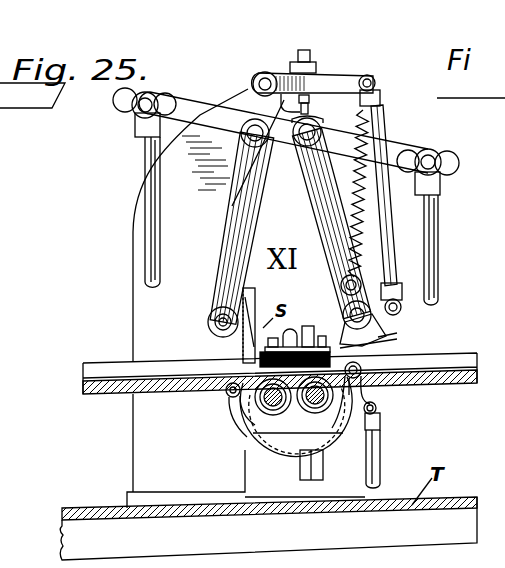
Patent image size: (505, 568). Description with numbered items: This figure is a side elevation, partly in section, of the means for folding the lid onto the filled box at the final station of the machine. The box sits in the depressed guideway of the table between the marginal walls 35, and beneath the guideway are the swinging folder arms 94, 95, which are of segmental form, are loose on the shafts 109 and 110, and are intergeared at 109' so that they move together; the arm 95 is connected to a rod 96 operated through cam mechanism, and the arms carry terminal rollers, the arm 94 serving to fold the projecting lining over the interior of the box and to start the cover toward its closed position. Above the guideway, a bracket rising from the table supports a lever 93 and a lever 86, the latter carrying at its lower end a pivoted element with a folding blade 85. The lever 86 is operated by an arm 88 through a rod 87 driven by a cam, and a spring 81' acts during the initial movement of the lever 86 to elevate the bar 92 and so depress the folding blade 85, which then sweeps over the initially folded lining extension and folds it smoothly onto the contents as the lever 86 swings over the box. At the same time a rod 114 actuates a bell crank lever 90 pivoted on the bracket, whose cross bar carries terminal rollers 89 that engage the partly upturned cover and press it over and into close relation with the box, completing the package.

The marginal walls 35 is at (176, 372).
The spring 81' is at (363, 202).
The folding blade 85 is at (380, 342).
The lever 86 is at (320, 213).
The rod 87 is at (430, 258).
The arm 88 is at (395, 148).
The terminal rollers 89 is at (208, 322).
The bell crank lever 90 is at (230, 250).
The bar 92 is at (386, 205).
The lever 93 is at (338, 82).
The swinging folder arm 94 is at (233, 410).
The swinging folder arm 95 is at (360, 392).
The rod 96 is at (380, 450).
The shaft 109 is at (245, 427).
The intergearing 109' is at (294, 428).
The shaft 110 is at (333, 437).
The rod 114 is at (160, 214).